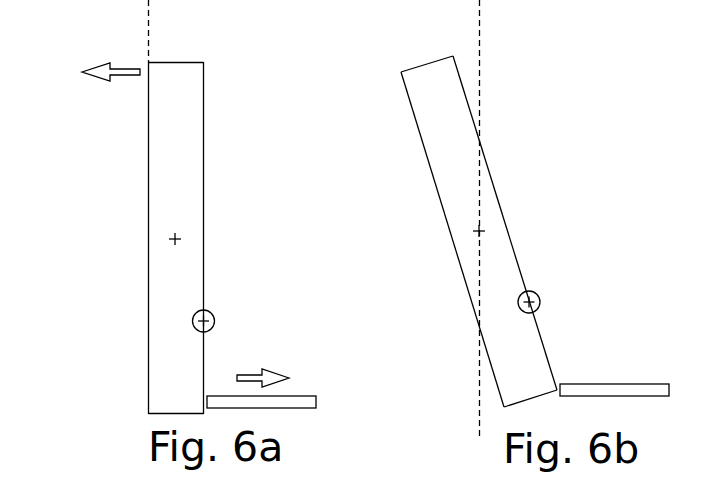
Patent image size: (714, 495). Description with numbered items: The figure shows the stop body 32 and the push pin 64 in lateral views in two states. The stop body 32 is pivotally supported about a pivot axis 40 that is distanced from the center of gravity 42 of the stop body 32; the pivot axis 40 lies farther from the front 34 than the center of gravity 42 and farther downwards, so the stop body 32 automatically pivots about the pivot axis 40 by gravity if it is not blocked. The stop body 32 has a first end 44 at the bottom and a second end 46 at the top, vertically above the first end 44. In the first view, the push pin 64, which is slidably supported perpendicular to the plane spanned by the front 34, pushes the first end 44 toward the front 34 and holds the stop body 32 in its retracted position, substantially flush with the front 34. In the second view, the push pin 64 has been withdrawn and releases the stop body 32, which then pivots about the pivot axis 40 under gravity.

In FIG. 6A, the stop body 32 is at (160, 251).
In FIG. 6B, the stop body 32 is at (448, 178).
In FIG. 6A, the front 34 is at (148, 12).
In FIG. 6B, the front 34 is at (479, 12).
In FIG. 6A, the pivot axis 40 is at (215, 316).
In FIG. 6B, the pivot axis 40 is at (541, 297).
In FIG. 6A, the center of gravity 42 is at (178, 238).
In FIG. 6B, the center of gravity 42 is at (485, 229).
In FIG. 6A, the first end 44 is at (142, 404).
In FIG. 6B, the first end 44 is at (560, 373).
In FIG. 6A, the second end 46 is at (140, 82).
In FIG. 6B, the second end 46 is at (401, 88).
In FIG. 6A, the push pin 64 is at (300, 402).
In FIG. 6B, the push pin 64 is at (632, 390).